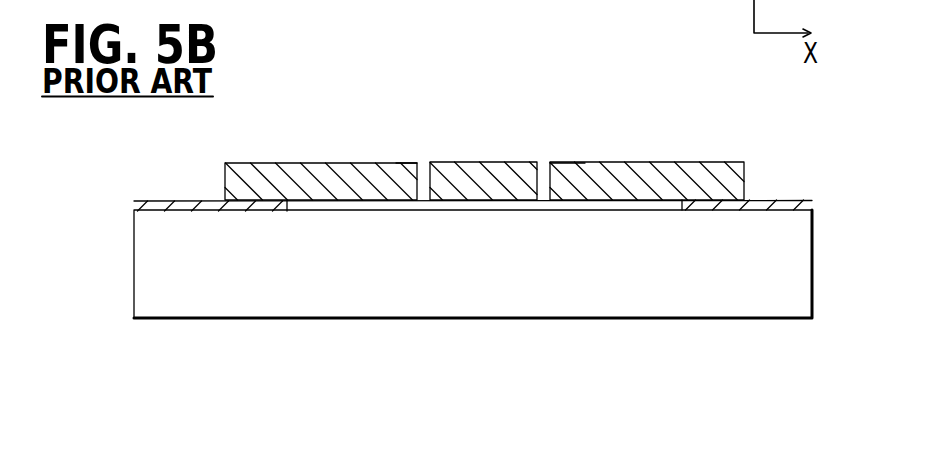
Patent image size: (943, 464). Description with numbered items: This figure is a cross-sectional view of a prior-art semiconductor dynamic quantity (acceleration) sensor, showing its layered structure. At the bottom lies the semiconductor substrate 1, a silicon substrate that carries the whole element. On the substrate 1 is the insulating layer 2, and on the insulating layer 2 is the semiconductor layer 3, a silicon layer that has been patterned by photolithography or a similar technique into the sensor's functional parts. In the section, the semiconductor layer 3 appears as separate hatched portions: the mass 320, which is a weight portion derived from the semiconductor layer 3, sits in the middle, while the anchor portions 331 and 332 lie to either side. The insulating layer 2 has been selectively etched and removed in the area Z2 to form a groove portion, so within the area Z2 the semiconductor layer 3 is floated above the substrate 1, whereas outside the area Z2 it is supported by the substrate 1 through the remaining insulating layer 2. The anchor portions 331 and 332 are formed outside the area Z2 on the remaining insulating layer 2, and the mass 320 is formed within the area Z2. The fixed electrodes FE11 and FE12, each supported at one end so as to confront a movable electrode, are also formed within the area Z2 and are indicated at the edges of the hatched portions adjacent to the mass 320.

The semiconductor substrate 1 is at (134, 287).
The insulating layer 2 is at (134, 203).
The semiconductor layer 3 is at (216, 181).
The anchor portion 331 is at (260, 163).
The mass 320 is at (461, 162).
The anchor portion 332 is at (705, 162).
The fixed electrode FE11 is at (395, 160).
The fixed electrode FE12 is at (584, 160).
The area Z2 is at (395, 206).